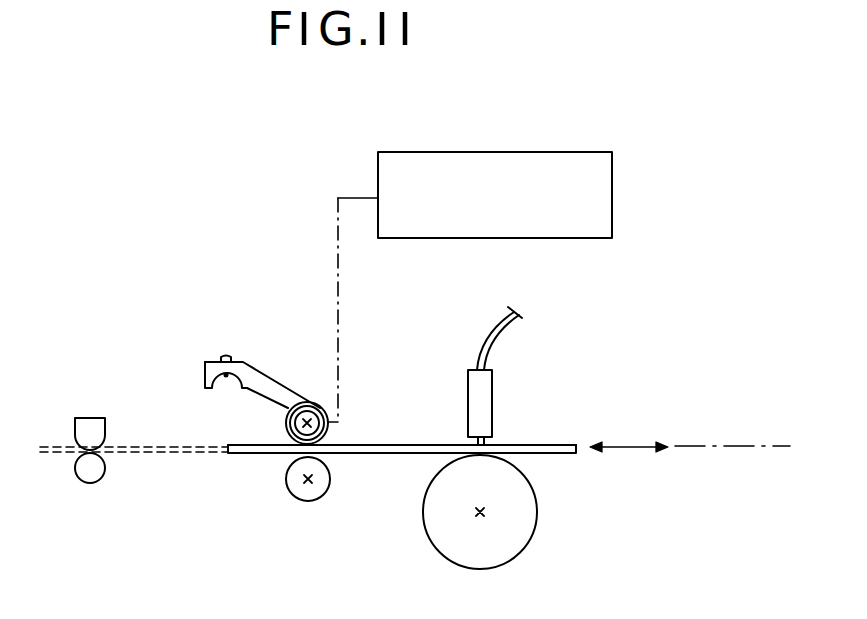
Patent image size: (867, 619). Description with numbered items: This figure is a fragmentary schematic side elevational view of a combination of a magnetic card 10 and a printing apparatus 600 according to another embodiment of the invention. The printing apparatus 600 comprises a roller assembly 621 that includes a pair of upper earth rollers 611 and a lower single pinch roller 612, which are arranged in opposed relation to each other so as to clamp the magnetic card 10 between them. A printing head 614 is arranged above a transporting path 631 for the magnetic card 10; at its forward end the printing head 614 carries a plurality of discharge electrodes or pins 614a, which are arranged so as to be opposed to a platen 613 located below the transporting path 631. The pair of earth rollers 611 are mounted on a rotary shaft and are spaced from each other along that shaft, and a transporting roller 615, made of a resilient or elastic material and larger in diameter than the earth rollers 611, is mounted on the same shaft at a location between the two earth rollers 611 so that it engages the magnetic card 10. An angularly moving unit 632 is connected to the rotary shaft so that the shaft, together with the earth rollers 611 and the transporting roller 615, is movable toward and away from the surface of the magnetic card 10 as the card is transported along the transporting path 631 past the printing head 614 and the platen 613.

The magnetic card 10 is at (553, 453).
The printing apparatus 600 is at (160, 377).
The upper earth rollers 611 is at (290, 437).
The lower single pinch roller 612 is at (293, 487).
The platen 613 is at (428, 497).
The printing head 614 is at (468, 407).
The discharge electrodes or pins 614a is at (486, 440).
The transporting roller 615 is at (290, 412).
The roller assembly 621 is at (312, 522).
The transporting path 631 is at (765, 445).
The angularly moving unit 632 is at (550, 238).